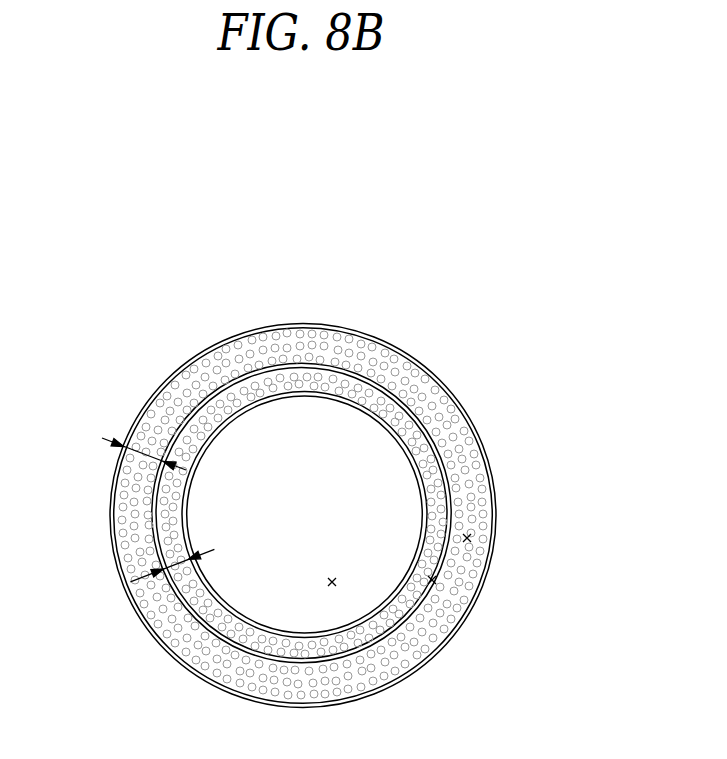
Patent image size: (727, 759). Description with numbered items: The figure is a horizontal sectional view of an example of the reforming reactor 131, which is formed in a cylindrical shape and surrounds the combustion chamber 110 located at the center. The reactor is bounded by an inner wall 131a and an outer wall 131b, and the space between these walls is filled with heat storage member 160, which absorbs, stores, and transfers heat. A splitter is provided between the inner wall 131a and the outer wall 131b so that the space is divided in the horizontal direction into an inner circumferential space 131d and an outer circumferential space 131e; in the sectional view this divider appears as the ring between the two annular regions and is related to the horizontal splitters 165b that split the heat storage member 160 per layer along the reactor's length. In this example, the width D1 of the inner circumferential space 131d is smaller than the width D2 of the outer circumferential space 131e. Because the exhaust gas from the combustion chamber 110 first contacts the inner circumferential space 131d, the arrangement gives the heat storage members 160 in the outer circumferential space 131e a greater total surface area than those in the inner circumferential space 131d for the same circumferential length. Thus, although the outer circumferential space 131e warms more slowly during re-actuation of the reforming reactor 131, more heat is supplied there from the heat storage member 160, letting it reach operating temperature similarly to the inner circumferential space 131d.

The reforming reactor 131 is at (348, 476).
The inner wall 131a is at (420, 465).
The outer wall 131b is at (462, 400).
The inner circumferential space 131d is at (432, 580).
The outer circumferential space 131e is at (467, 538).
The heat storage member 160 is at (257, 337).
The horizontal splitter 165b is at (313, 364).
The combustion chamber 110 is at (333, 584).
The width of the inner circumferential space D1 is at (153, 568).
The width of the outer circumferential space D2 is at (143, 453).